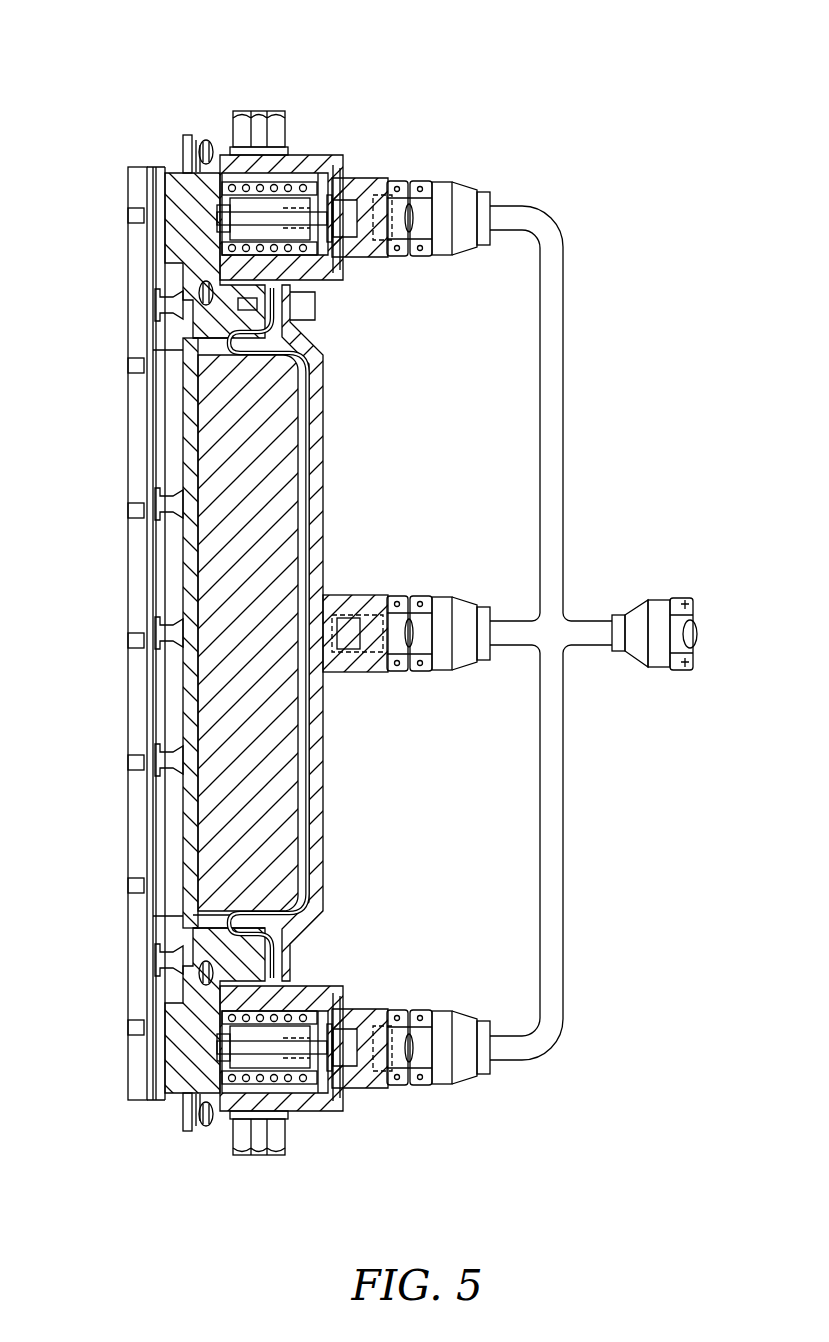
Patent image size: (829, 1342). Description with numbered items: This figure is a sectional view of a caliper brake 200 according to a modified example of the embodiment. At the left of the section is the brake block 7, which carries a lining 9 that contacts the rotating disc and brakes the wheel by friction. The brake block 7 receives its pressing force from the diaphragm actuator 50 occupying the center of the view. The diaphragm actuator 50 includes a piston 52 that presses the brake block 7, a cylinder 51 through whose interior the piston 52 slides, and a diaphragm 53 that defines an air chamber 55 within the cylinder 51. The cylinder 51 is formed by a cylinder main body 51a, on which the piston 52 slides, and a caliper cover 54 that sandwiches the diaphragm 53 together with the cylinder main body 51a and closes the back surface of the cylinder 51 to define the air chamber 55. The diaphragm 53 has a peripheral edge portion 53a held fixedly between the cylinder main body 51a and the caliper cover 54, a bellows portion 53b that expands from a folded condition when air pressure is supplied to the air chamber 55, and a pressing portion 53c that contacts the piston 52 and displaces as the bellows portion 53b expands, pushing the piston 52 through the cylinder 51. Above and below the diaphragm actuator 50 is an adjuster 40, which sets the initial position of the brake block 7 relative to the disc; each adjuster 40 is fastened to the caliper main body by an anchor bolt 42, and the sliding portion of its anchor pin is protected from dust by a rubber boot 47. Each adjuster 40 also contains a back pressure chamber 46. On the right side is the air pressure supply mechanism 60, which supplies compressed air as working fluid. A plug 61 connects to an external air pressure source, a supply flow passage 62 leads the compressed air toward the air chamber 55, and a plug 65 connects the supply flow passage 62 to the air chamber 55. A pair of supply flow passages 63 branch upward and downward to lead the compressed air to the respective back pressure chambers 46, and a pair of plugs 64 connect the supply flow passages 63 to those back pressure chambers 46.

The caliper brake 200 is at (615, 90).
The brake block 7 is at (127, 714).
The lining 9 is at (150, 650).
The adjuster 40 is at (302, 130).
The anchor bolt 42 is at (250, 118).
The back pressure chamber 46 is at (332, 178).
The rubber boot 47 is at (212, 140).
The diaphragm actuator 50 is at (323, 407).
The cylinder 51 is at (192, 287).
The cylinder main body 51a is at (212, 312).
The piston 52 is at (215, 522).
The diaphragm 53 is at (305, 788).
The peripheral edge portion 53a is at (250, 948).
The bellows portion 53b is at (215, 915).
The pressing portion 53c is at (312, 825).
The caliper cover 54 is at (318, 498).
The air chamber 55 is at (308, 452).
The air pressure supply mechanism 60 is at (568, 220).
The plug 61 is at (640, 625).
The supply flow passage 62 is at (508, 633).
The supply flow passage 63 is at (553, 440).
The plug 64 is at (462, 216).
The plug 65 is at (463, 632).